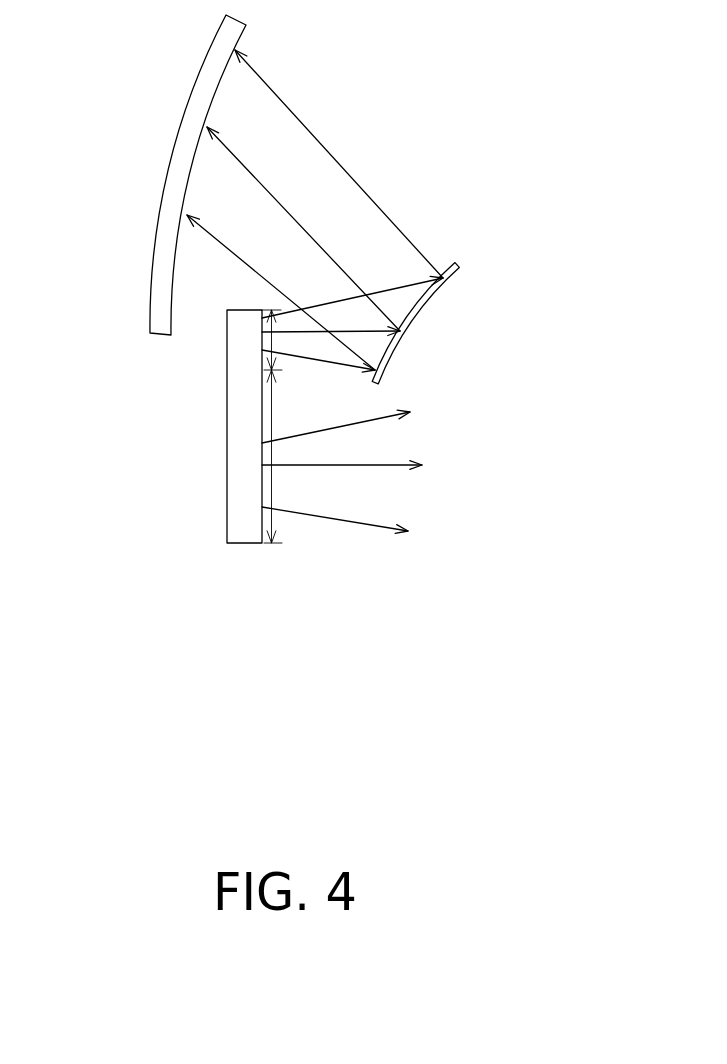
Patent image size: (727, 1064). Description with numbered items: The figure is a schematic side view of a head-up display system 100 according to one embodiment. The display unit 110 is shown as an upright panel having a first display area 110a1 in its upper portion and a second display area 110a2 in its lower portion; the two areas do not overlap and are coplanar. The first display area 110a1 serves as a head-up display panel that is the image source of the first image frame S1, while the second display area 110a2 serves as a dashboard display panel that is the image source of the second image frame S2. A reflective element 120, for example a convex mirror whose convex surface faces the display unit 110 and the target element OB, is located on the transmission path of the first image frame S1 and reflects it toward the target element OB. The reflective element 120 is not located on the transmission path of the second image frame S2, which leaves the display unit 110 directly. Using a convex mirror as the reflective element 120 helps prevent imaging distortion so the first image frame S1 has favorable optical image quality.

The head-up display system 100 is at (628, 682).
The display unit 110 is at (245, 533).
The first display area 110a1 is at (262, 340).
The second display area 110a2 is at (272, 425).
The reflective element 120 is at (423, 312).
The target element OB is at (175, 142).
The first image frame S1 is at (393, 287).
The second image frame S2 is at (367, 525).